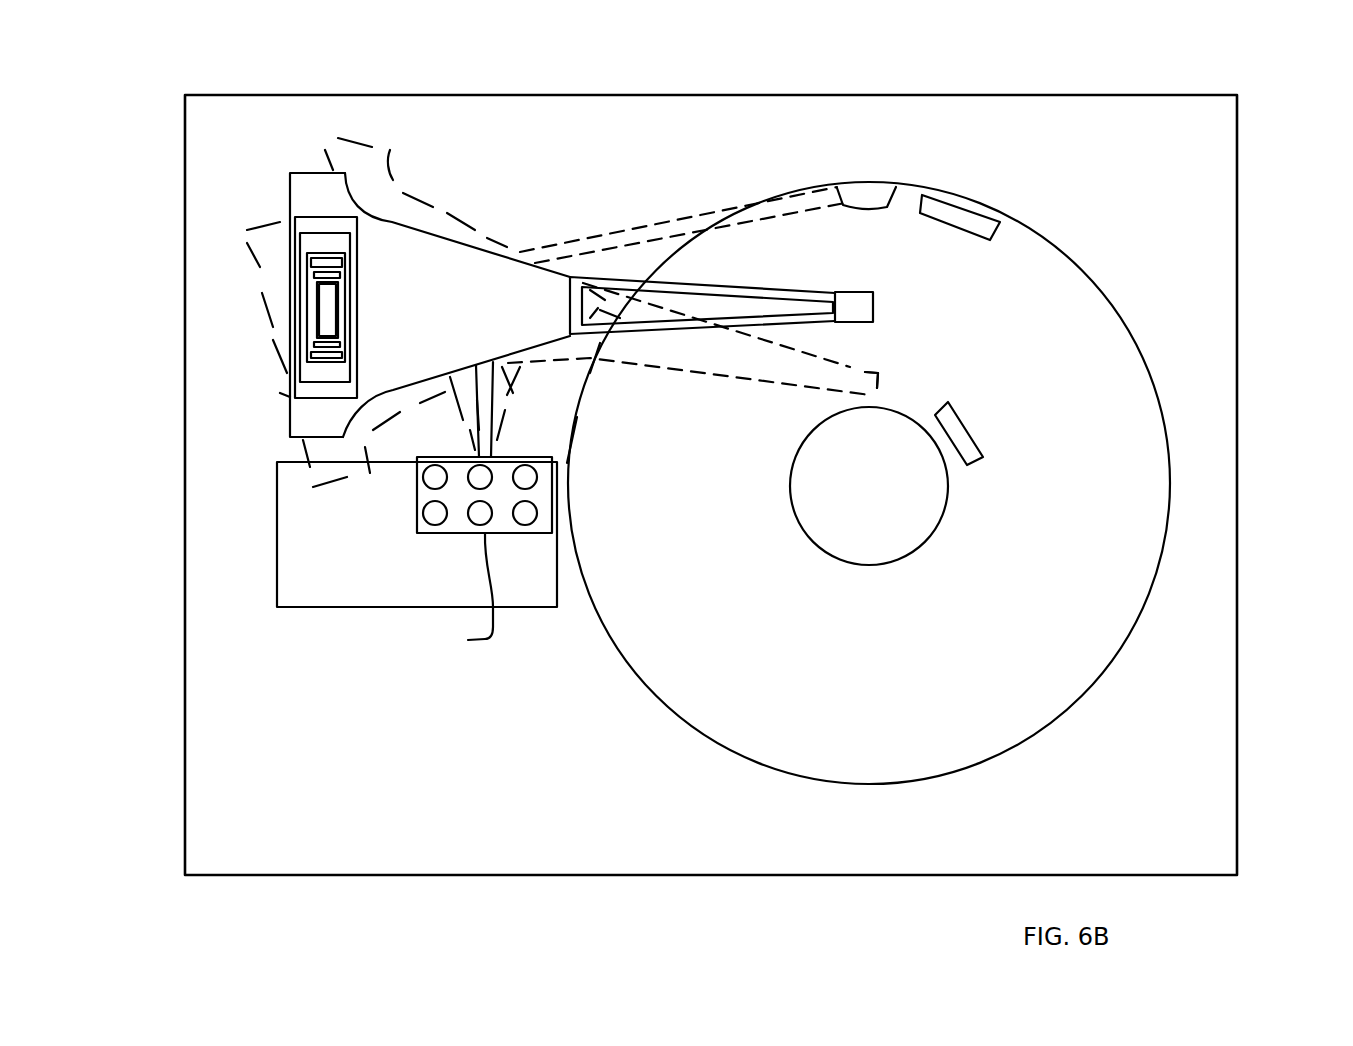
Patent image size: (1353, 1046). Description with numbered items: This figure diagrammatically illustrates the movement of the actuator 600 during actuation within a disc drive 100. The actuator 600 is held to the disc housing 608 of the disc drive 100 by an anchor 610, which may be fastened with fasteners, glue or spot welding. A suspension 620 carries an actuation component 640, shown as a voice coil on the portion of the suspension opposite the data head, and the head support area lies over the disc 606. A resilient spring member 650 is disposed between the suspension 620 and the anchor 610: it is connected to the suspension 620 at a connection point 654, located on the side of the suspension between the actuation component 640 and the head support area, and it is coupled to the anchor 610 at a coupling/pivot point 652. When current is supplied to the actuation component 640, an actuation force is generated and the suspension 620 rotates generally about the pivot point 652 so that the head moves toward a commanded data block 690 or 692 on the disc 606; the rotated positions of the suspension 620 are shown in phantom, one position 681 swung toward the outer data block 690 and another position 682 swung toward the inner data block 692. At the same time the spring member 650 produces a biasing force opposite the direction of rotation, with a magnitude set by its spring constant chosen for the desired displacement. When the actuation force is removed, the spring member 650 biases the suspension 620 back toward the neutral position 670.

The disc drive 100 is at (1266, 275).
The actuator 600 is at (492, 203).
The disc 606 is at (653, 697).
The disc housing 608 is at (308, 560).
The anchor 610 is at (456, 595).
The suspension 620 is at (467, 252).
The actuation component 640 is at (307, 311).
The spring member 650 is at (492, 408).
The coupling/pivot point 652 is at (492, 456).
The connection point 654 is at (483, 363).
The neutral position 670 is at (875, 310).
The parking ramp 681 is at (895, 190).
The rotated position 682 is at (878, 388).
The data block 690 is at (960, 217).
The data block 692 is at (957, 432).